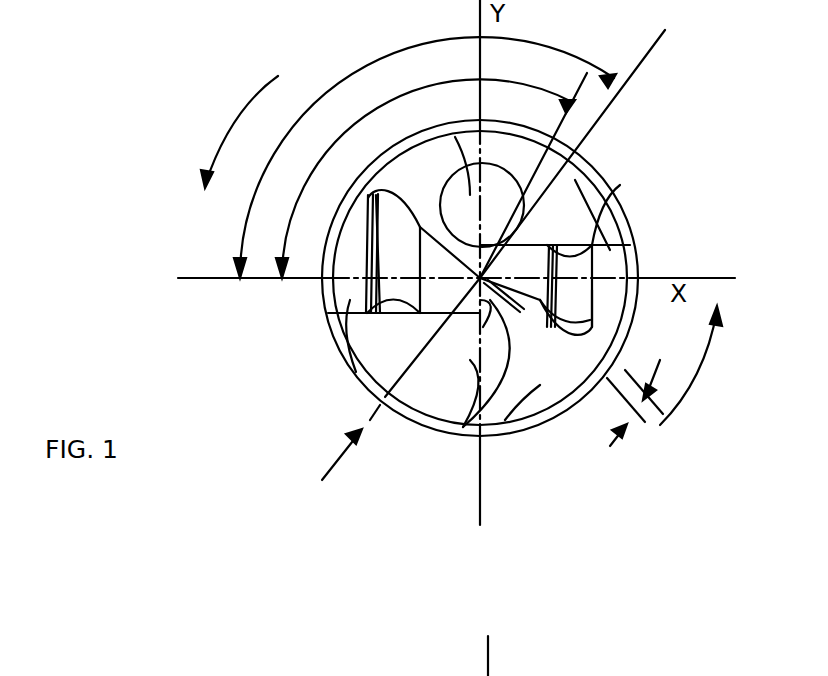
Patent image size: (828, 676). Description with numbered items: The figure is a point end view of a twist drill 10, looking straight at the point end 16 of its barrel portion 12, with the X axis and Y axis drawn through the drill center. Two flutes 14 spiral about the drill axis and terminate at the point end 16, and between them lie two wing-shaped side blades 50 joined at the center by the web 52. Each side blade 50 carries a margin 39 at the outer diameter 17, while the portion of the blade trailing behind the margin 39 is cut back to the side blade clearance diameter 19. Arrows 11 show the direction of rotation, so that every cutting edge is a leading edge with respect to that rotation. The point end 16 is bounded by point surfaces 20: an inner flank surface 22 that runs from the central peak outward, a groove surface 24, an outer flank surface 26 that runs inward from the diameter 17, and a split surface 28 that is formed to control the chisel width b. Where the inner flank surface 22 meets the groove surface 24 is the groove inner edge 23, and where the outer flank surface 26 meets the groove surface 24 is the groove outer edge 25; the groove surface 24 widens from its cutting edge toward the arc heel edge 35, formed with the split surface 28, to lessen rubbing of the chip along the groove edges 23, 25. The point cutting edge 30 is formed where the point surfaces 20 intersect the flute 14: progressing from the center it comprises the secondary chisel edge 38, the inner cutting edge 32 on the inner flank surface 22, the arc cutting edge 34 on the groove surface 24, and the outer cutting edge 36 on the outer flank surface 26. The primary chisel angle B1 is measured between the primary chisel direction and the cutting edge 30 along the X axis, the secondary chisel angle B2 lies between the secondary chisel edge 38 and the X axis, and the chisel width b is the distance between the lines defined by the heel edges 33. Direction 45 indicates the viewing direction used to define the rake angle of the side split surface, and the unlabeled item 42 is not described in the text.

The twist drill 10 is at (432, 444).
The arrows indicating direction of rotation 11 is at (262, 82).
The barrel portion 12 is at (620, 234).
The flutes 14 is at (356, 372).
The point end 16 is at (494, 280).
The diameter 17 is at (326, 312).
The side blade clearance diameter 19 is at (615, 360).
The point surfaces 20 is at (428, 160).
The inner flank surface 22 is at (492, 312).
The groove inner edge 23 is at (549, 296).
The groove surface 24 is at (370, 196).
The groove outer edge 25 is at (594, 292).
The outer flank surface 26 is at (350, 256).
The split surface 28 is at (462, 134).
The point cutting edge 30 is at (416, 322).
The inner cutting edge 32 is at (530, 208).
The heel edges 33 is at (432, 214).
The arc cutting edge 34 is at (398, 312).
The arc heel edge 35 is at (510, 355).
The outer cutting edge 36 is at (335, 334).
The secondary chisel edge 38 is at (473, 228).
The margins 39 is at (635, 252).
The clearance surface 42 is at (350, 346).
The viewing direction 45 is at (334, 458).
The side blades 50 is at (360, 220).
The web 52 is at (490, 358).
The primary chisel angle B1 is at (425, 178).
The secondary chisel angle B2 is at (425, 153).
The chisel width b is at (635, 403).